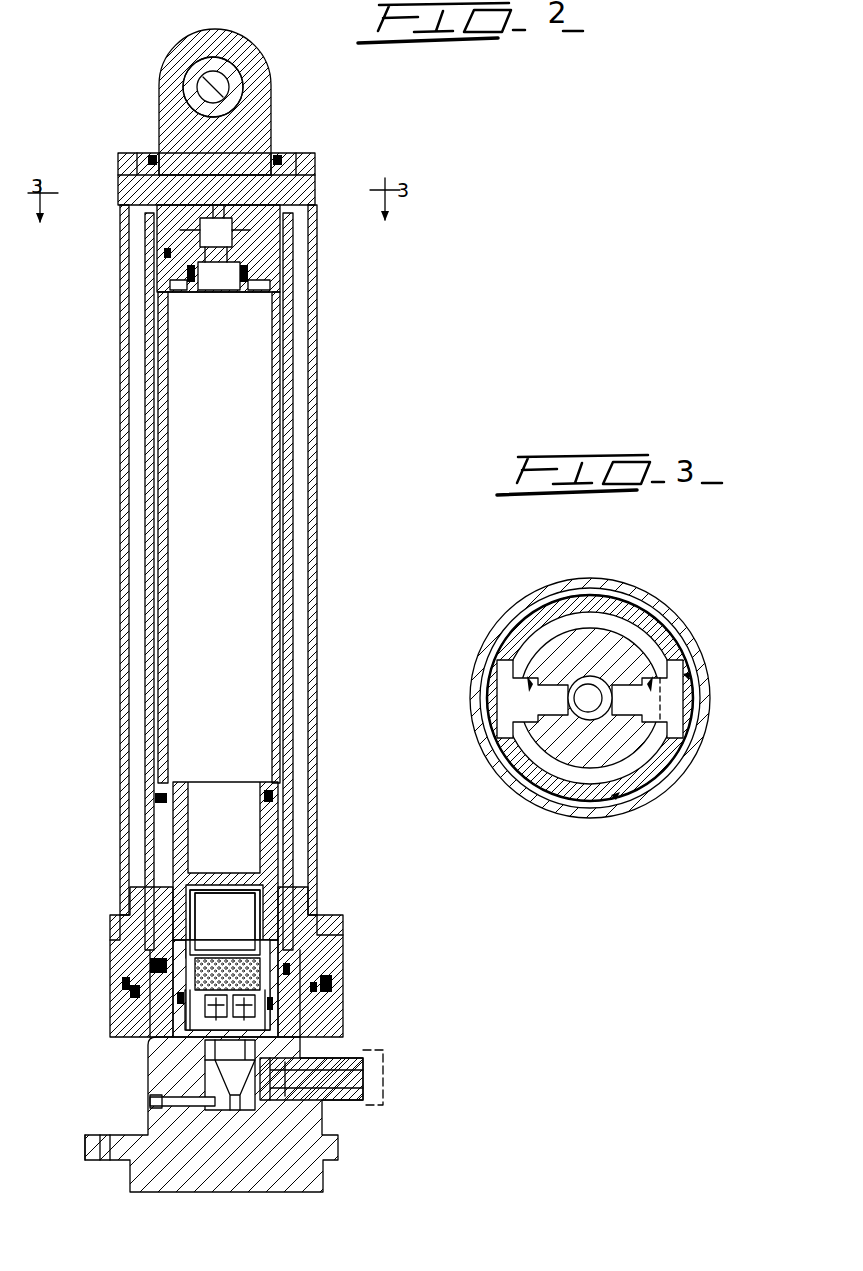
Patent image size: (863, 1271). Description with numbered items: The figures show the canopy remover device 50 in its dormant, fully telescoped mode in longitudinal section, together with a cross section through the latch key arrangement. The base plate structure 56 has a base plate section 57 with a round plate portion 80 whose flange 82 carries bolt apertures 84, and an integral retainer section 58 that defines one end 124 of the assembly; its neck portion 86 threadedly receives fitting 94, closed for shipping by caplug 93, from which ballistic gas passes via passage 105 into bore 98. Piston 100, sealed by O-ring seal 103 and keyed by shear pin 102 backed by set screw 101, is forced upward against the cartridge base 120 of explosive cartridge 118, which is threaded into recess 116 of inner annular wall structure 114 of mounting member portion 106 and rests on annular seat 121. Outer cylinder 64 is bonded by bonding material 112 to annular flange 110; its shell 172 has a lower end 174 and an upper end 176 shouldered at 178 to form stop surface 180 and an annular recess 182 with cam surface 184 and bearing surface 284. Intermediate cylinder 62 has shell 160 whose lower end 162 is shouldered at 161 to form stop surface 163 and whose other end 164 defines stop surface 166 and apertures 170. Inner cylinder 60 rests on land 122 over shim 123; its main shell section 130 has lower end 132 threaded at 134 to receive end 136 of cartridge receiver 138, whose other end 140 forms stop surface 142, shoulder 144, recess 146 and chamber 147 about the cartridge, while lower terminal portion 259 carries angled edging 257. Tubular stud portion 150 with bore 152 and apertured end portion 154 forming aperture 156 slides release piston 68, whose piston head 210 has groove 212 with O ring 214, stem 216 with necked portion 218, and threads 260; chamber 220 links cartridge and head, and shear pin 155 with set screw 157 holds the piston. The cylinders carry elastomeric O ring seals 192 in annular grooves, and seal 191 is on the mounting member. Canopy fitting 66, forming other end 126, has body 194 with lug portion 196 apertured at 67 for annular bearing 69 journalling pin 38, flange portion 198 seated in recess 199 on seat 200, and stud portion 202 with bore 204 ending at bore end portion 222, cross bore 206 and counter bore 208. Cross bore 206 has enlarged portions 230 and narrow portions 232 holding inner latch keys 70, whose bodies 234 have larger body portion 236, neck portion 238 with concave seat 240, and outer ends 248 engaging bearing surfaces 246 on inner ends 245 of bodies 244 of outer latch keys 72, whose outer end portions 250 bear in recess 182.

In FIG. 2, the pin 38 is at (218, 66).
In FIG. 2, the canopy remover device 50 is at (340, 413).
In FIG. 3, the canopy remover device 50 is at (584, 822).
In FIG. 2, the base plate structure 56 is at (378, 1016).
In FIG. 2, the base plate section 57 is at (322, 1195).
In FIG. 2, the retainer section 58 is at (372, 953).
In FIG. 2, the inner cylinder 60 is at (279, 512).
In FIG. 2, the intermediate cylinder 62 is at (294, 448).
In FIG. 3, the intermediate cylinder 62 is at (605, 812).
In FIG. 2, the outer cylinder 64 is at (314, 352).
In FIG. 3, the outer cylinder 64 is at (673, 795).
In FIG. 2, the canopy fitting 66 is at (162, 52).
In FIG. 2, the aperture 67 is at (244, 90).
In FIG. 2, the release piston 68 is at (180, 268).
In FIG. 2, the annular bearing 69 is at (214, 80).
In FIG. 2, the inner latch keys 70 is at (270, 143).
In FIG. 3, the inner latch keys 70 is at (523, 655).
In FIG. 2, the outer latch keys 72 is at (310, 190).
In FIG. 3, the outer latch keys 72 is at (700, 692).
In FIG. 2, the plate portion 80 is at (82, 1160).
In FIG. 2, the flange 82 is at (138, 1168).
In FIG. 2, the apertures 84 is at (96, 1150).
In FIG. 2, the neck portion 86 is at (336, 1165).
In FIG. 2, the caplug 93 is at (383, 1088).
In FIG. 2, the fitting 94 is at (362, 1060).
In FIG. 2, the annular chamber or bore 98 is at (192, 1046).
In FIG. 2, the piston 100 is at (206, 1080).
In FIG. 2, the set screw 101 is at (162, 1101).
In FIG. 2, the shear pin 102 is at (192, 1102).
In FIG. 2, the O-ring seal 103 is at (330, 1118).
In FIG. 2, the passage 105 is at (253, 1100).
In FIG. 2, the mounting member portion 106 is at (325, 995).
In FIG. 2, the annular flange 110 is at (325, 935).
In FIG. 2, the bonding material 112 is at (330, 925).
In FIG. 2, the inner annular wall structure 114 is at (185, 1010).
In FIG. 2, the recess 116 is at (195, 1020).
In FIG. 2, the explosive cartridge 118 is at (210, 873).
In FIG. 2, the cartridge base 120 is at (292, 1010).
In FIG. 2, the annular seat 121 is at (320, 1030).
In FIG. 2, the annular land 122 is at (160, 965).
In FIG. 2, the shim 123 is at (166, 935).
In FIG. 2, the one end 124 is at (415, 975).
In FIG. 2, the other end 126 is at (355, 66).
In FIG. 2, the main shell section 130 is at (276, 548).
In FIG. 2, the lower end 132 is at (270, 848).
In FIG. 2, the internal threads 134 is at (270, 862).
In FIG. 2, the one end 136 is at (266, 820).
In FIG. 2, the cartridge receiver 138 is at (190, 812).
In FIG. 2, the other end 140 is at (300, 965).
In FIG. 2, the annular stop surface 142 is at (162, 870).
In FIG. 2, the annular shoulder 144 is at (166, 855).
In FIG. 2, the annular recess 146 is at (172, 860).
In FIG. 2, the chamber 147 is at (241, 873).
In FIG. 2, the tubular stud portion 150 is at (250, 278).
In FIG. 2, the bore 152 is at (200, 292).
In FIG. 2, the apertured end portion 154 is at (185, 262).
In FIG. 2, the shear pin 155 is at (282, 236).
In FIG. 2, the aperture 156 is at (176, 124).
In FIG. 2, the set screw 157 is at (266, 246).
In FIG. 2, the shell 160 is at (291, 474).
In FIG. 2, the shoulder 161 is at (320, 952).
In FIG. 2, the lower end 162 is at (300, 978).
In FIG. 2, the annular stop surface 163 is at (328, 910).
In FIG. 2, the other end 164 is at (290, 178).
In FIG. 2, the annular stop surface 166 is at (252, 256).
In FIG. 2, the apertures 170 is at (150, 232).
In FIG. 3, the apertures 170 is at (530, 720).
In FIG. 2, the shell 172 is at (316, 385).
In FIG. 2, the lower end 174 is at (126, 925).
In FIG. 2, the upper end 176 is at (120, 162).
In FIG. 2, the shoulder 178 is at (316, 200).
In FIG. 2, the annular stop surface 180 is at (170, 252).
In FIG. 2, the annular recess 182 is at (140, 216).
In FIG. 3, the annular recess 182 is at (588, 800).
In FIG. 2, the cam surface 184 is at (122, 178).
In FIG. 2, the seal 191 is at (118, 975).
In FIG. 2, the O-ring seal 192 is at (302, 166).
In FIG. 2, the metallic body 194 is at (185, 48).
In FIG. 2, the lug portion 196 is at (252, 62).
In FIG. 2, the annular flange portion 198 is at (286, 162).
In FIG. 2, the recess 199 is at (150, 300).
In FIG. 2, the annular seat 200 is at (272, 286).
In FIG. 2, the stud portion 202 is at (162, 240).
In FIG. 3, the stud portion 202 is at (612, 615).
In FIG. 2, the bore 204 is at (257, 150).
In FIG. 2, the cross bore 206 is at (164, 170).
In FIG. 3, the cross bore 206 is at (622, 790).
In FIG. 2, the counter bore 208 is at (190, 278).
In FIG. 2, the piston head 210 is at (196, 292).
In FIG. 2, the groove 212 is at (230, 292).
In FIG. 2, the O ring 214 is at (286, 300).
In FIG. 2, the stem 216 is at (238, 114).
In FIG. 2, the necked portion 218 is at (276, 152).
In FIG. 3, the necked portion 218 is at (581, 680).
In FIG. 2, the chamber 220 is at (196, 625).
In FIG. 2, the bore end portion 222 is at (170, 150).
In FIG. 3, the radially outer enlarged portions 230 is at (548, 625).
In FIG. 3, the radially inner narrow portions 232 is at (542, 583).
In FIG. 3, the metallic bodies 234 is at (682, 735).
In FIG. 3, the larger body portion 236 is at (700, 668).
In FIG. 3, the neck portion 238 is at (665, 698).
In FIG. 3, the concave seat 240 is at (590, 598).
In FIG. 3, the metallic bodies 244 is at (496, 680).
In FIG. 3, the inner ends 245 is at (506, 660).
In FIG. 3, the bearing surfaces 246 is at (690, 680).
In FIG. 3, the outer ends 248 is at (705, 705).
In FIG. 3, the outer end portions 250 is at (490, 695).
In FIG. 2, the angled edging 257 is at (194, 815).
In FIG. 2, the lower terminal portion 259 is at (193, 820).
In FIG. 2, the threads 260 is at (216, 300).
In FIG. 3, the bearing surface 284 is at (680, 655).